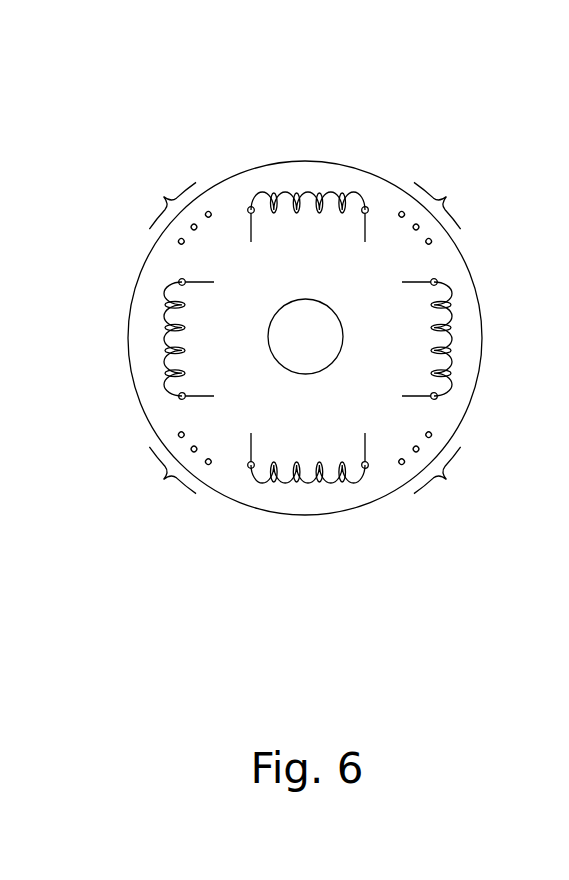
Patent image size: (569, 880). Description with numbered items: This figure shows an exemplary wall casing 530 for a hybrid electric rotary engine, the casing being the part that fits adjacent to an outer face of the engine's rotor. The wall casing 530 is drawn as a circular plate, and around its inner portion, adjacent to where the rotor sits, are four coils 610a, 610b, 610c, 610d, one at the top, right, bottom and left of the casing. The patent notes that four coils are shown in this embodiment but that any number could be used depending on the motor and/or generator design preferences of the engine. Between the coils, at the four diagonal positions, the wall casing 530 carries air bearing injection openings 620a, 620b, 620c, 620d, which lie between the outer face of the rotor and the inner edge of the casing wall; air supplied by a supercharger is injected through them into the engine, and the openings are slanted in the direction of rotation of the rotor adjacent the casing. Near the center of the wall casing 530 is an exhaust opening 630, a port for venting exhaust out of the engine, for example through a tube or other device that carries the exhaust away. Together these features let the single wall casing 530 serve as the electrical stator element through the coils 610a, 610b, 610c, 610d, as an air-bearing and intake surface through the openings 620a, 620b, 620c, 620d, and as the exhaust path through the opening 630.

The wall casing 530 is at (297, 94).
The coil 610a is at (333, 193).
The coil 610b is at (453, 315).
The coil 610c is at (291, 485).
The coil 610d is at (164, 313).
The air bearing injection opening 620a is at (441, 212).
The air bearing injection opening 620b is at (434, 467).
The air bearing injection opening 620c is at (175, 466).
The air bearing injection opening 620d is at (172, 213).
The exhaust opening 630 is at (333, 362).